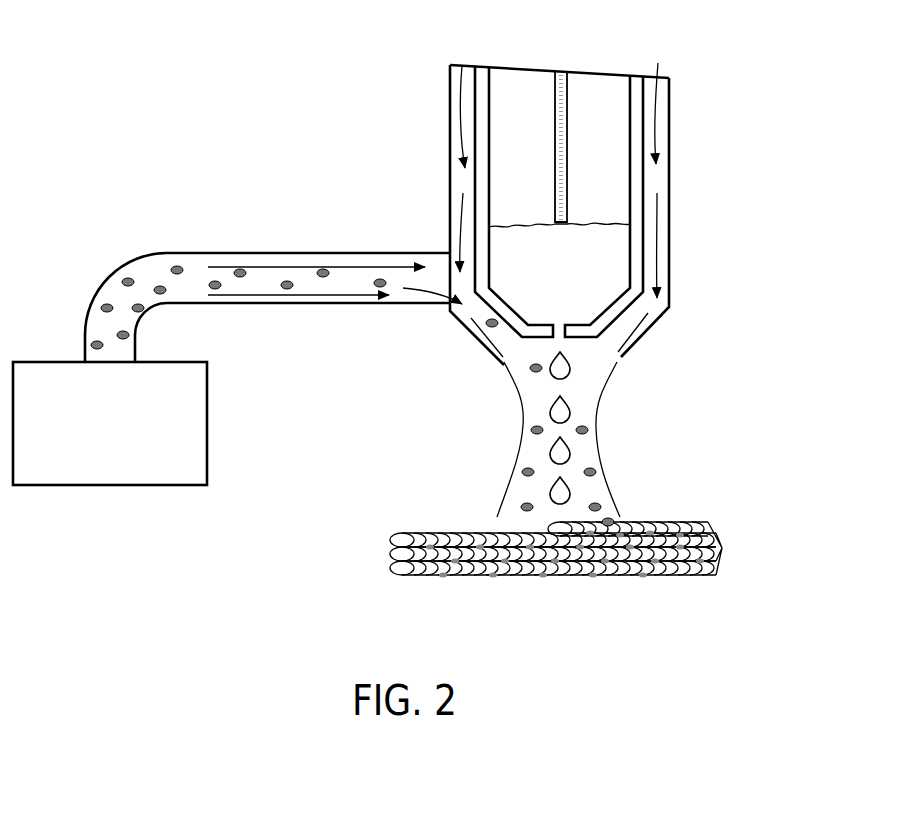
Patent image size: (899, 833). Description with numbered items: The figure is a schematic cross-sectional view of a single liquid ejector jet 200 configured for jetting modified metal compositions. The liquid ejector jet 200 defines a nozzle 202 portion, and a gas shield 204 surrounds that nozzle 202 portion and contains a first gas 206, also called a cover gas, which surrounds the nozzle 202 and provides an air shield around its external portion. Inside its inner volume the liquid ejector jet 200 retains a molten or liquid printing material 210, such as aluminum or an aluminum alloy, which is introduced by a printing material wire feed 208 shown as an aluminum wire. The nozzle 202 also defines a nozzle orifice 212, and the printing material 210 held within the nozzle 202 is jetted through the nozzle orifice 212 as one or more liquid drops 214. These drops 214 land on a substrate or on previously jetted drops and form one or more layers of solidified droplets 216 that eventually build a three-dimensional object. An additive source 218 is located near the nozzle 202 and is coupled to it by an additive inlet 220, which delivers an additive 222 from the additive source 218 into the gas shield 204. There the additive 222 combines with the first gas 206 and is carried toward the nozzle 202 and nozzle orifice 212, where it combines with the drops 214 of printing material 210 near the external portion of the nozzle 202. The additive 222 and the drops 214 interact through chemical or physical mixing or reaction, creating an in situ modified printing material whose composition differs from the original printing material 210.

The liquid ejector jet 200 is at (214, 104).
The nozzle 202 is at (638, 188).
The gas shield 204 is at (450, 208).
The first gas 206 is at (653, 135).
The printing material wire feed 208 is at (569, 89).
The printing material 210 is at (623, 250).
The nozzle orifice 212 is at (576, 349).
The liquid drops 214 is at (571, 410).
The layers of solidified droplets 216 is at (722, 548).
The additive source 218 is at (197, 417).
The additive inlet 220 is at (310, 305).
The additive 222 is at (160, 288).